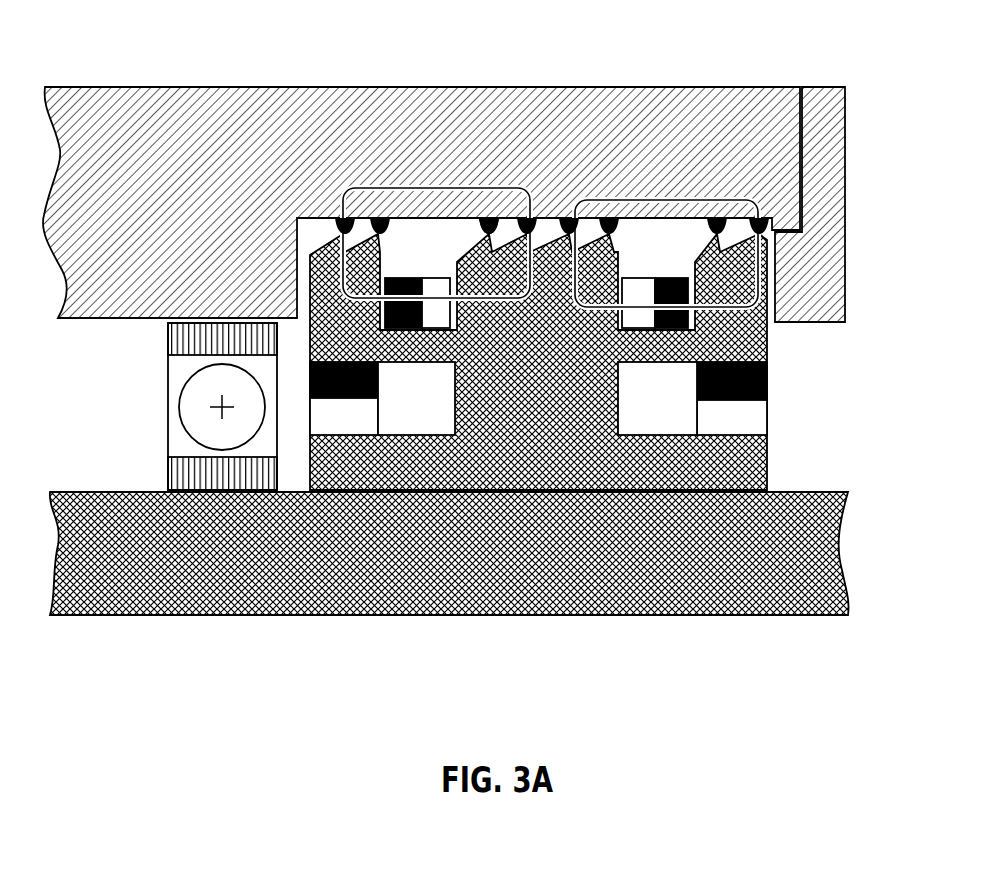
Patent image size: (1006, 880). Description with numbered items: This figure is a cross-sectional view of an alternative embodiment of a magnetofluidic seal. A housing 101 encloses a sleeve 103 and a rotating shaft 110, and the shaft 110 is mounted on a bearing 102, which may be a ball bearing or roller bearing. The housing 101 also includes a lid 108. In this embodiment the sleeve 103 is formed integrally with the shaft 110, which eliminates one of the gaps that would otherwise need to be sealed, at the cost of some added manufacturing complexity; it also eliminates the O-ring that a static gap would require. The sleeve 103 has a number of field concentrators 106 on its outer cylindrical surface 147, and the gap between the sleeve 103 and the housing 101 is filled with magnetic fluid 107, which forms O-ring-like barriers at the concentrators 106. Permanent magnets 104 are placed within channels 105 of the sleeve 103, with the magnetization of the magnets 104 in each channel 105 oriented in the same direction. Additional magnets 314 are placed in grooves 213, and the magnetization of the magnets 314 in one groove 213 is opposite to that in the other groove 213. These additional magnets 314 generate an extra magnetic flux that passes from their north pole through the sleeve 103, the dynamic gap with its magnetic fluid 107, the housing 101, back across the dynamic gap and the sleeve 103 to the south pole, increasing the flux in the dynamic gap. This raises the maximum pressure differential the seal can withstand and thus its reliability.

The housing 101 is at (145, 192).
The bearing 102 is at (197, 340).
The sleeve 103 is at (322, 257).
The permanent magnet 104 is at (368, 362).
The channel 105 is at (417, 383).
The field concentrator 106 is at (759, 243).
The magnetic fluid 107 is at (487, 225).
The lid 108 is at (837, 103).
The rotating shaft 110 is at (797, 540).
The outer cylindrical surface 147 is at (521, 256).
The groove 213 is at (448, 232).
The additional magnet 314 is at (675, 285).